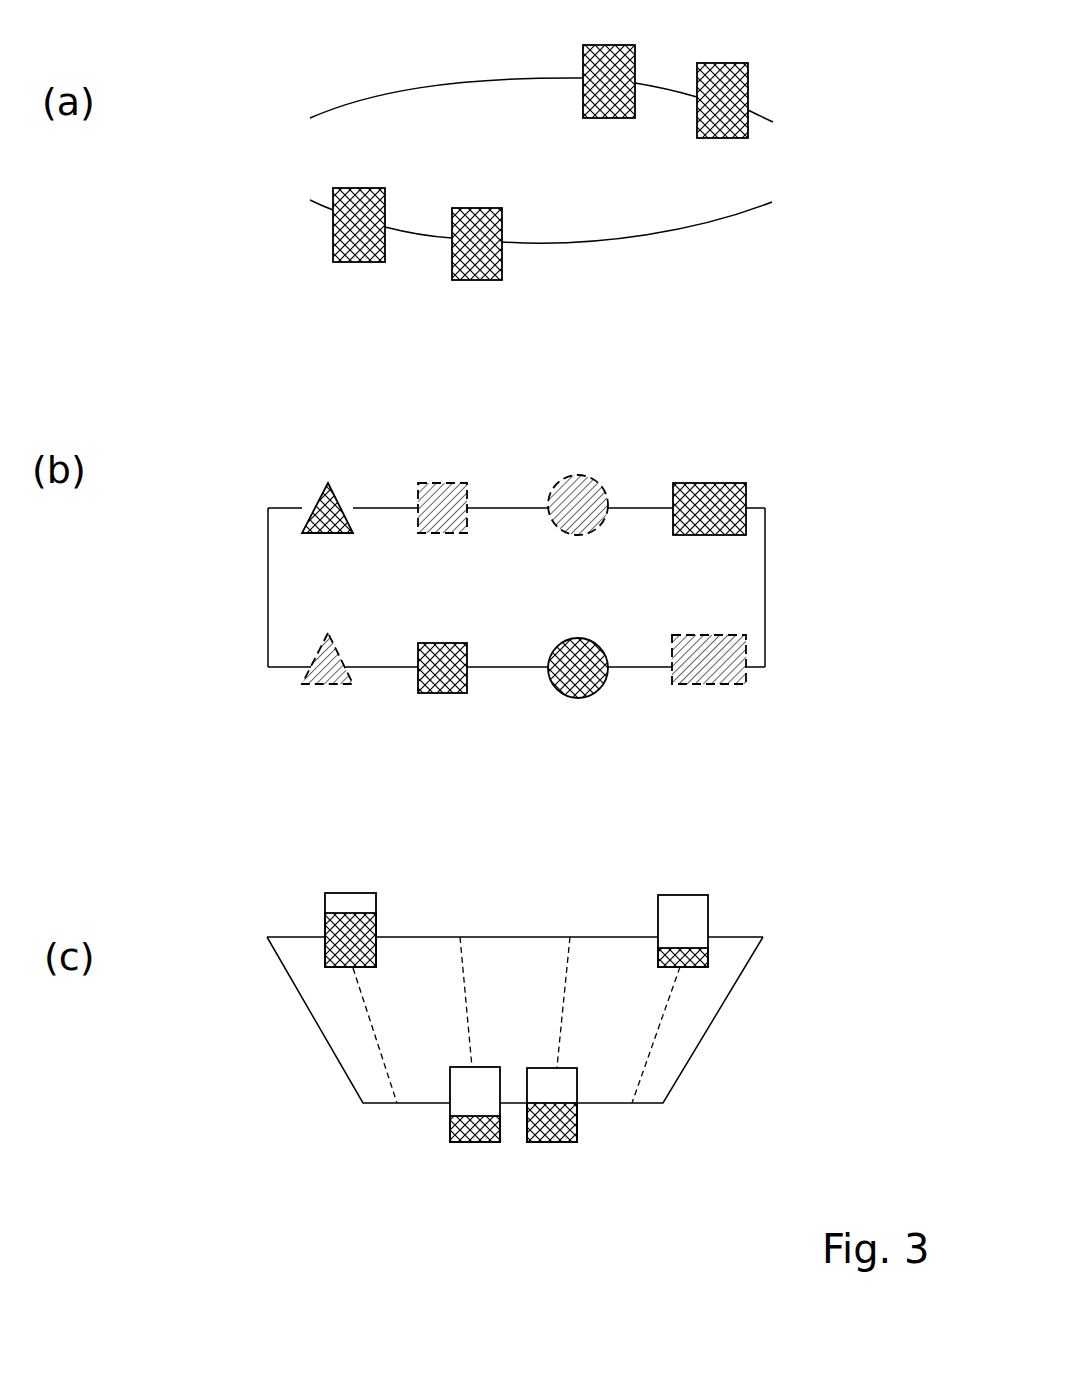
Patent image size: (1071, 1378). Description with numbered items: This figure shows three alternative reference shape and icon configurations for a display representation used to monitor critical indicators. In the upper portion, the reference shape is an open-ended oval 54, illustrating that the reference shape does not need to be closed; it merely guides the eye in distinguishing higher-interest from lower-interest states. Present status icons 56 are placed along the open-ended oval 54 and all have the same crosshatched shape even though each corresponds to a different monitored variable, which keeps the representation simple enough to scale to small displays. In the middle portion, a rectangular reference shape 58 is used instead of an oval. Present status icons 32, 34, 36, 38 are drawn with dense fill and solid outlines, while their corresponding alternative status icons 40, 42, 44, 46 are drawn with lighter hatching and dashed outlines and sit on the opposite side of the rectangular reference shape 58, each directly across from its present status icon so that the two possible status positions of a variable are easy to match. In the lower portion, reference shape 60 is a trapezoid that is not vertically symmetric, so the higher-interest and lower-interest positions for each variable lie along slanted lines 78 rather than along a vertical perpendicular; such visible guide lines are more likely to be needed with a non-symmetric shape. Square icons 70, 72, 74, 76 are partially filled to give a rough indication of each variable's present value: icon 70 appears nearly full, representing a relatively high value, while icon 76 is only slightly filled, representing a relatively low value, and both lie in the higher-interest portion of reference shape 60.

The present status icon 32 is at (328, 507).
The present status icon 34 is at (433, 683).
The present status icon 36 is at (595, 678).
The present status icon 38 is at (730, 500).
The alternative status icon 40 is at (313, 677).
The alternative status icon 42 is at (423, 498).
The alternative status icon 44 is at (592, 493).
The alternative status icon 46 is at (725, 670).
The open-ended oval 54 is at (332, 112).
The present status icons 56 is at (727, 72).
The rectangular reference shape 58 is at (767, 585).
The reference shape 60 is at (703, 1038).
The square icon 70 is at (363, 923).
The square icon 72 is at (473, 1133).
The square icon 74 is at (557, 1128).
The square icon 76 is at (695, 912).
The slanted lines 78 is at (463, 980).